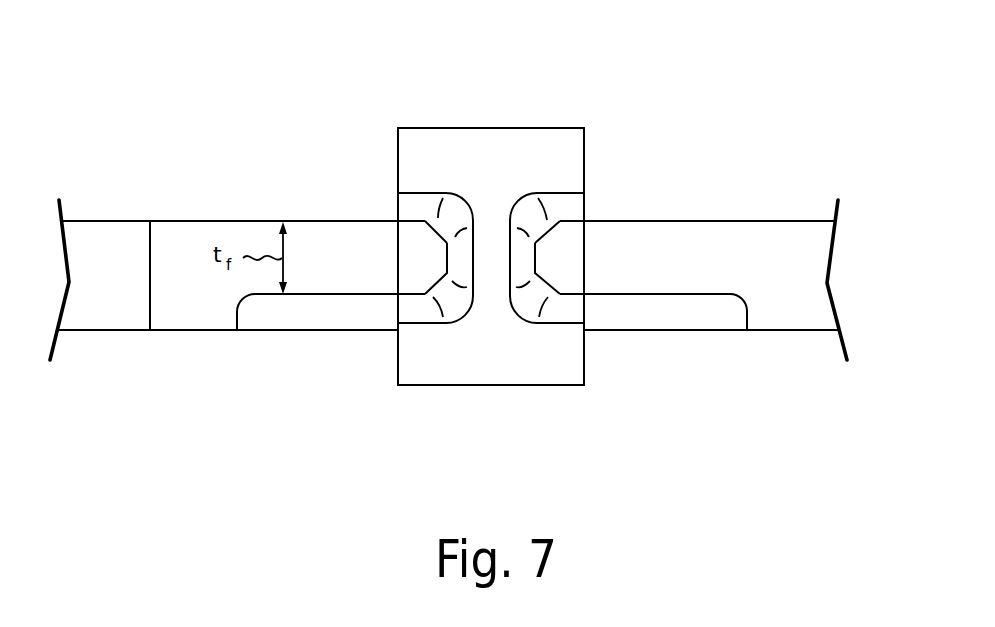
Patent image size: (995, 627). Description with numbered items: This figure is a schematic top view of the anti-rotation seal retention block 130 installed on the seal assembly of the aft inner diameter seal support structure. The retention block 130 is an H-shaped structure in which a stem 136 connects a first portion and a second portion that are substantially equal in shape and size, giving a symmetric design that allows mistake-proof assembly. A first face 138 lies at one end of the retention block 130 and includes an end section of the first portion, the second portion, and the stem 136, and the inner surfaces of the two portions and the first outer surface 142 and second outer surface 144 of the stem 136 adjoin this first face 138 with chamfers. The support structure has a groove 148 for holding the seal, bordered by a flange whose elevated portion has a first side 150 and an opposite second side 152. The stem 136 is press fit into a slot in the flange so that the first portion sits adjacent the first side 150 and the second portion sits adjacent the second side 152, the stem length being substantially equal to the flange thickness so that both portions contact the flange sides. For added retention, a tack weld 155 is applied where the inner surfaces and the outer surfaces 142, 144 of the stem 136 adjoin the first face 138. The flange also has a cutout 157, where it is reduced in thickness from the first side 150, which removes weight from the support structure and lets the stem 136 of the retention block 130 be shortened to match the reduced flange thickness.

The retention block 130 is at (493, 108).
The stem 136 is at (493, 267).
The first face 138 is at (497, 368).
The first outer surface 142 is at (437, 246).
The second outer surface 144 is at (526, 240).
The groove 148 is at (795, 277).
The first side 150 is at (780, 333).
The second side 152 is at (773, 221).
The tack weld 155 is at (549, 259).
The cutout 157 is at (268, 308).